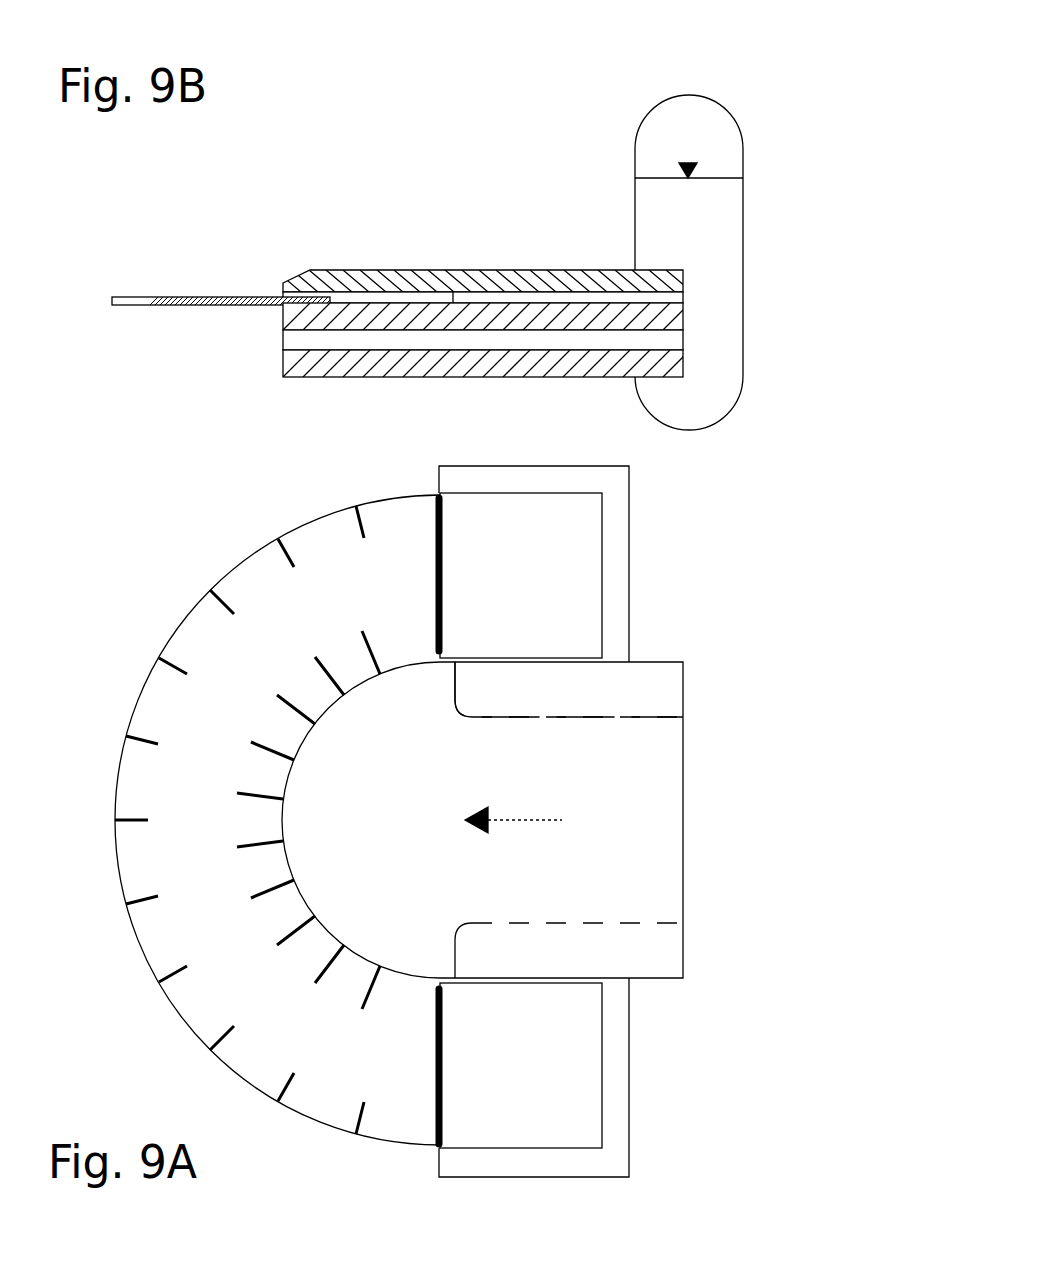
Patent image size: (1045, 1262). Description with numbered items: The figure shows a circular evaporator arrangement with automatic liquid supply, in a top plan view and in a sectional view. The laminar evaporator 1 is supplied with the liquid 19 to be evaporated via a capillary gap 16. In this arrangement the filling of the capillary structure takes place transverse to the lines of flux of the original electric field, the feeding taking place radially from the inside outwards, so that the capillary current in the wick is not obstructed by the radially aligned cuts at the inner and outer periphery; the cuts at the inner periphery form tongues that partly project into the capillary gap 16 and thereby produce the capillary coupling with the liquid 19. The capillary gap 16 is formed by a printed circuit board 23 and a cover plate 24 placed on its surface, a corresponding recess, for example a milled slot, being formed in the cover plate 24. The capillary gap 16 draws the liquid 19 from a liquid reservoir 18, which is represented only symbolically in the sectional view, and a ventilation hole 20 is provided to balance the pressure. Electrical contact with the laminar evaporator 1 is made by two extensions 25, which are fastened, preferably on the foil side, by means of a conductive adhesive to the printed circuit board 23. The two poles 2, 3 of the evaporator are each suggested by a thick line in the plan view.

In FIG. 9B, the laminar evaporator 1 is at (158, 275).
In FIG. 9A, the laminar evaporator 1 is at (165, 618).
In FIG. 9A, the pole 2 is at (436, 536).
In FIG. 9A, the pole 3 is at (435, 1076).
In FIG. 9B, the capillary gap 16 is at (395, 298).
In FIG. 9B, the liquid reservoir 18 is at (718, 105).
In FIG. 9B, the liquid 19 is at (690, 222).
In FIG. 9B, the ventilation hole 20 is at (298, 340).
In FIG. 9B, the printed circuit board 23 is at (662, 365).
In FIG. 9A, the printed circuit board 23 is at (620, 1123).
In FIG. 9B, the cover plate 24 is at (517, 278).
In FIG. 9A, the cover plate 24 is at (618, 792).
In FIG. 9A, the extensions 25 is at (543, 578).